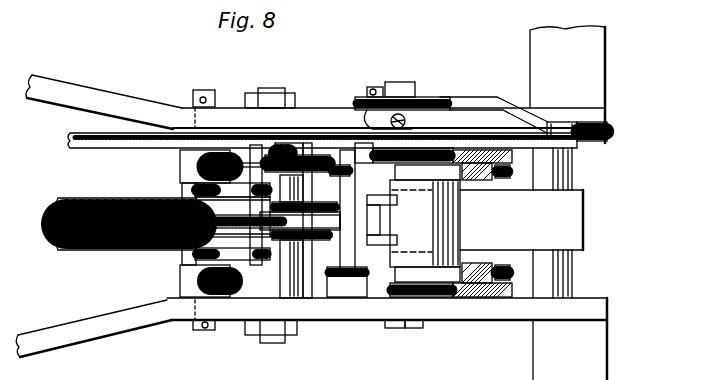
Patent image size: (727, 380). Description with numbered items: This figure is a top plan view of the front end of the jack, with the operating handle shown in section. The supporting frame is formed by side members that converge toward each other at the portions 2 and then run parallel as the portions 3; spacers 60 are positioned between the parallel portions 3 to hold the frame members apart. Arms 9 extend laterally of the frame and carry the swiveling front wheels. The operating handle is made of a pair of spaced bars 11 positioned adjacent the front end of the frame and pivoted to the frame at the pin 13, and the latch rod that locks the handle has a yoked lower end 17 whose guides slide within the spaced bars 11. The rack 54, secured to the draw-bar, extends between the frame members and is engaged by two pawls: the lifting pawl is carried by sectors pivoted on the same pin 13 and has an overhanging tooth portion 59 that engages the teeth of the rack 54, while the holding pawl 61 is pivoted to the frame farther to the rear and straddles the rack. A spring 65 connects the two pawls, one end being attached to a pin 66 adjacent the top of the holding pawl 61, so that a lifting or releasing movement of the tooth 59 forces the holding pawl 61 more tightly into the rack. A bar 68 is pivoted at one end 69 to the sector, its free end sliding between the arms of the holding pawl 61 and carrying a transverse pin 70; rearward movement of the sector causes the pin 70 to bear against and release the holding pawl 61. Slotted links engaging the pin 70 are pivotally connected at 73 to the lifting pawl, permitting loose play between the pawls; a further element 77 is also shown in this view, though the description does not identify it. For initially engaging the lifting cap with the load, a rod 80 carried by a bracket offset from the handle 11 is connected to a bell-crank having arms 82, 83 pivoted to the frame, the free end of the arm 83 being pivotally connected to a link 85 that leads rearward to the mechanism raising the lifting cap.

The converging portions of side members 2 is at (80, 95).
The parallel portions of side members 3 is at (313, 115).
The arms 9 is at (597, 58).
The spaced bars of operating handle 11 is at (475, 300).
The handle pivot pin 13 is at (408, 329).
The yoked lower end of latch rod 17 is at (483, 277).
The rack 54 is at (90, 205).
The overhanging tooth portion 59 is at (453, 210).
The spacers 60 is at (273, 335).
The holding pawl 61 is at (222, 262).
The spring 65 is at (305, 157).
The pin 66 is at (252, 257).
The bar 68 is at (170, 218).
The pivot of bar 69 is at (353, 263).
The pin 70 is at (290, 268).
The pivotal connection of links 73 is at (382, 226).
The fork 77 is at (320, 247).
The rod 80 is at (407, 123).
The bell-crank arm 82 is at (467, 103).
The bell-crank arm 83 is at (605, 123).
The link 85 is at (422, 145).